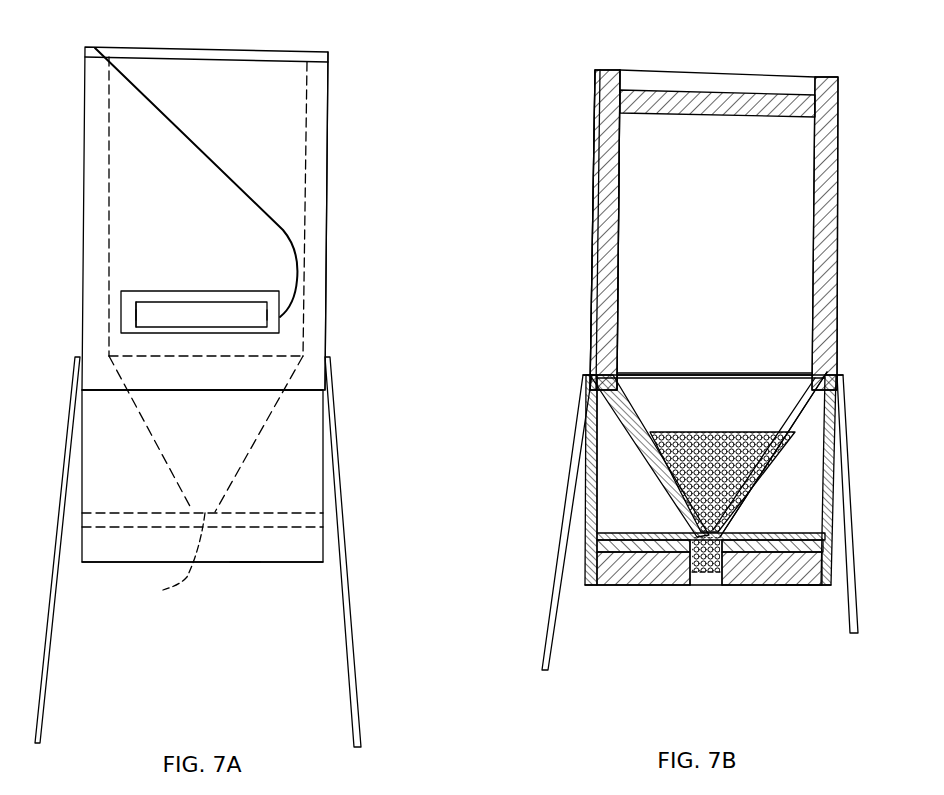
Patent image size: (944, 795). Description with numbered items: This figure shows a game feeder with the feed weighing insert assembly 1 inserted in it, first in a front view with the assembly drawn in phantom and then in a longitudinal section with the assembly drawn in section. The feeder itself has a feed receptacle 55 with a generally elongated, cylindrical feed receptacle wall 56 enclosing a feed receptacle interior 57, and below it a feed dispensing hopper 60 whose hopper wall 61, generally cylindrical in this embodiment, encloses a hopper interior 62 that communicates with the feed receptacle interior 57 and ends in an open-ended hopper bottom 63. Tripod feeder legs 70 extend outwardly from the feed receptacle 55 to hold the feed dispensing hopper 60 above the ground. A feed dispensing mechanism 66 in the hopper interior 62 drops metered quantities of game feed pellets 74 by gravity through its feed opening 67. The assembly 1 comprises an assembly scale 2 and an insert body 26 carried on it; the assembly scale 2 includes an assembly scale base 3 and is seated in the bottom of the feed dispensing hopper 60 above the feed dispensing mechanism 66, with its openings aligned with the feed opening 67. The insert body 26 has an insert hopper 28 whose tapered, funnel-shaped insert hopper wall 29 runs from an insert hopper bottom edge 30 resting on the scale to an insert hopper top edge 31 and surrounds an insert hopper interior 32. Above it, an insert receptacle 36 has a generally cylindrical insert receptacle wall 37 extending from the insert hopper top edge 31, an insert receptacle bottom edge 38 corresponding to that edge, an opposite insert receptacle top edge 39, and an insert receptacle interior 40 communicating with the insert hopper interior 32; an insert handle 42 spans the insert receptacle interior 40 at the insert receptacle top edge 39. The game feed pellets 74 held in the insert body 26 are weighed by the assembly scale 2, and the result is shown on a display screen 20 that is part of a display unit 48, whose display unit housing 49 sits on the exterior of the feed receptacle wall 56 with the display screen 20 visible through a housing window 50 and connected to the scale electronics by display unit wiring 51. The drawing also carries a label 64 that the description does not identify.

In FIG. 7A, the feed weighing insert assembly 1 is at (322, 78).
In FIG. 7B, the feed weighing insert assembly 1 is at (800, 78).
In FIG. 7A, the assembly scale 2 is at (244, 507).
In FIG. 7B, the assembly scale 2 is at (622, 552).
In FIG. 7B, the assembly scale base 3 is at (677, 575).
In FIG. 7A, the display screen 20 is at (152, 313).
In FIG. 7A, the insert body 26 is at (315, 119).
In FIG. 7B, the insert body 26 is at (607, 63).
In FIG. 7A, the insert hopper 28 is at (258, 441).
In FIG. 7B, the insert hopper 28 is at (647, 493).
In FIG. 7B, the insert hopper wall 29 is at (753, 488).
In FIG. 7A, the insert hopper bottom edge 30 is at (165, 558).
In FIG. 7B, the insert hopper bottom edge 30 is at (800, 590).
In FIG. 7A, the insert hopper top edge 31 is at (270, 357).
In FIG. 7B, the insert hopper top edge 31 is at (710, 372).
In FIG. 7B, the insert hopper interior 32 is at (652, 385).
In FIG. 7A, the insert receptacle 36 is at (307, 197).
In FIG. 7B, the insert receptacle 36 is at (598, 260).
In FIG. 7B, the insert receptacle wall 37 is at (610, 297).
In FIG. 7A, the insert receptacle bottom edge 38 is at (287, 362).
In FIG. 7B, the insert receptacle bottom edge 38 is at (790, 375).
In FIG. 7B, the insert receptacle top edge 39 is at (613, 70).
In FIG. 7B, the insert receptacle interior 40 is at (653, 183).
In FIG. 7B, the insert handle 42 is at (745, 103).
In FIG. 7A, the display unit 48 is at (185, 290).
In FIG. 7A, the display unit housing 49 is at (257, 295).
In FIG. 7A, the housing opening or window 50 is at (262, 320).
In FIG. 7A, the display unit wiring 51 is at (195, 133).
In FIG. 7A, the feed receptacle 55 is at (325, 237).
In FIG. 7B, the feed receptacle 55 is at (593, 128).
In FIG. 7A, the feed receptacle wall 56 is at (313, 287).
In FIG. 7B, the feed receptacle wall 56 is at (593, 222).
In FIG. 7B, the feed receptacle interior 57 is at (585, 402).
In FIG. 7A, the feed dispensing hopper 60 is at (328, 543).
In FIG. 7B, the feed dispensing hopper 60 is at (588, 505).
In FIG. 7A, the hopper wall 61 is at (290, 420).
In FIG. 7B, the hopper wall 61 is at (593, 438).
In FIG. 7B, the hopper interior 62 is at (623, 458).
In FIG. 7A, the hopper bottom 63 is at (242, 562).
In FIG. 7B, the hopper bottom 63 is at (743, 587).
In FIG. 7A, the slot left edge 64 is at (133, 317).
In FIG. 7B, the feed dispensing mechanism 66 is at (683, 587).
In FIG. 7B, the feed opening 67 is at (715, 587).
In FIG. 7A, the tripod feeder legs 70 is at (343, 617).
In FIG. 7B, the tripod feeder legs 70 is at (555, 587).
In FIG. 7B, the game feed pellets 74 is at (710, 435).